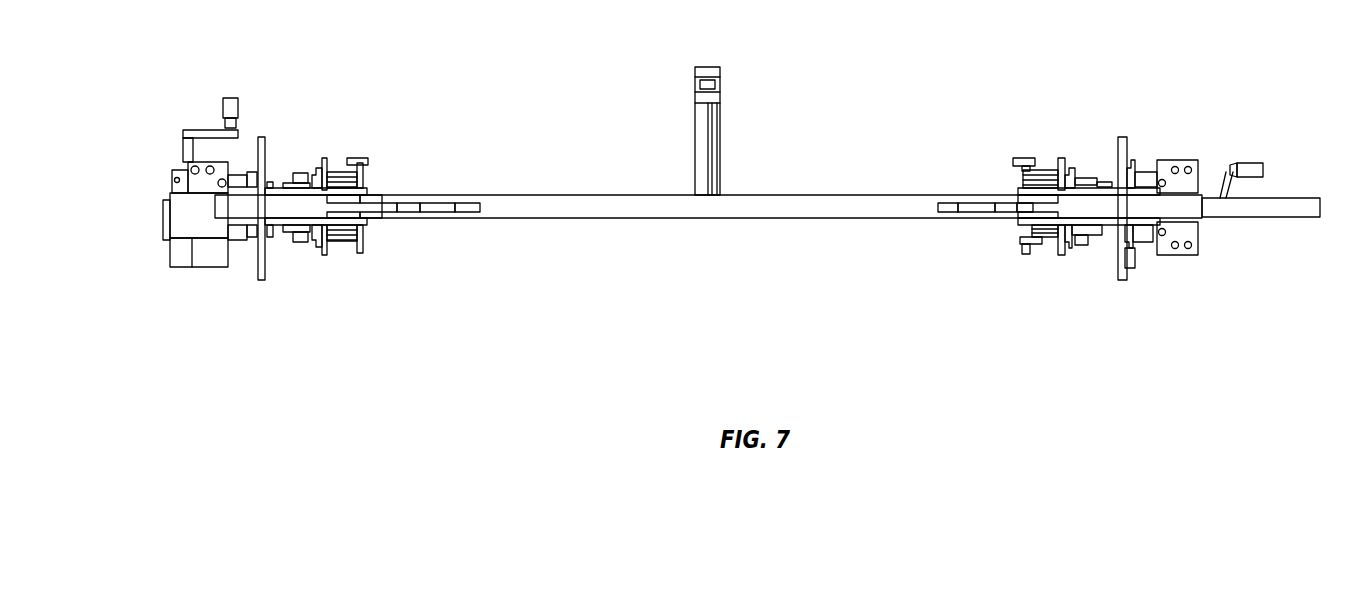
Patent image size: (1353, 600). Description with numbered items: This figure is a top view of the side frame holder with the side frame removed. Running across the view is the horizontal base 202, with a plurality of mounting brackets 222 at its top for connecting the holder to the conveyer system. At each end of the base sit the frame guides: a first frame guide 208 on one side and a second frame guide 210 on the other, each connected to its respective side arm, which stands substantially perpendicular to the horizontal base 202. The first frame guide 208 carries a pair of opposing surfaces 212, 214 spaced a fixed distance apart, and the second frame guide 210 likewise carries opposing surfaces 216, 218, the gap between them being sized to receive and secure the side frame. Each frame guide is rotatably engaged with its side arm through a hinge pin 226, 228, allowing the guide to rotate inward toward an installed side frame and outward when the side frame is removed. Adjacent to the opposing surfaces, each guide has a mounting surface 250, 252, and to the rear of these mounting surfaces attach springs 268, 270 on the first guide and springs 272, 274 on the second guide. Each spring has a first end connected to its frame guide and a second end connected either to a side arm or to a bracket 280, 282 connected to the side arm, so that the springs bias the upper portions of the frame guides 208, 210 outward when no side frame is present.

The horizontal base 202 is at (510, 202).
The first frame guide 208 is at (330, 245).
The second frame guide 210 is at (1060, 254).
The opposing surface 212 is at (342, 168).
The opposing surface 214 is at (363, 237).
The opposing surface 216 is at (1037, 160).
The opposing surface 218 is at (1045, 244).
The mounting brackets 222 is at (393, 197).
The hinge pin 226 is at (300, 243).
The hinge pin 228 is at (1083, 244).
The mounting surface 250 is at (335, 245).
The mounting surface 252 is at (1059, 167).
The spring 268 is at (292, 228).
The spring 270 is at (290, 177).
The spring 272 is at (1093, 232).
The spring 274 is at (1088, 176).
The bracket 280 is at (257, 268).
The bracket 282 is at (1130, 258).